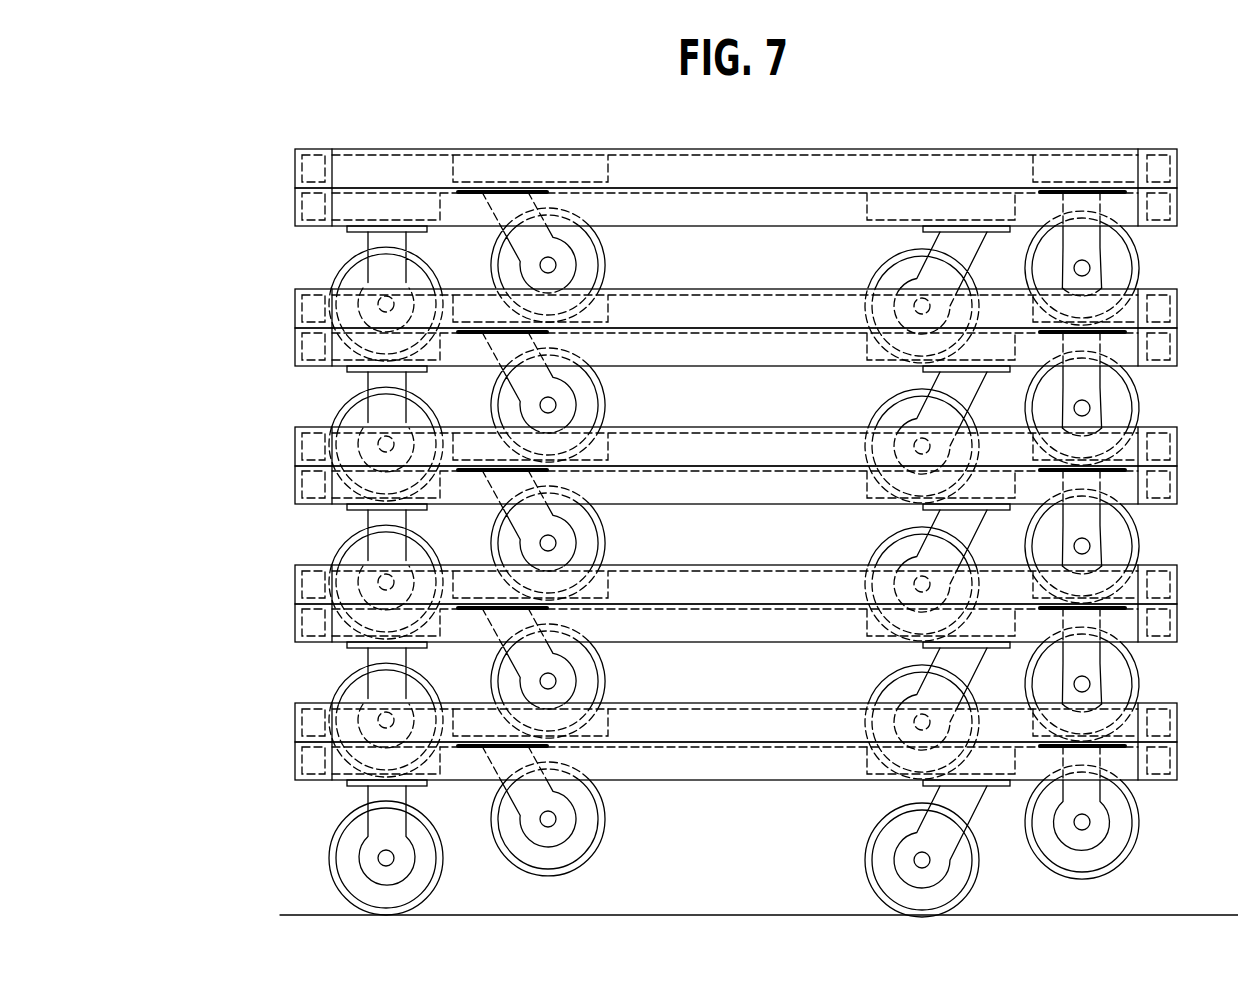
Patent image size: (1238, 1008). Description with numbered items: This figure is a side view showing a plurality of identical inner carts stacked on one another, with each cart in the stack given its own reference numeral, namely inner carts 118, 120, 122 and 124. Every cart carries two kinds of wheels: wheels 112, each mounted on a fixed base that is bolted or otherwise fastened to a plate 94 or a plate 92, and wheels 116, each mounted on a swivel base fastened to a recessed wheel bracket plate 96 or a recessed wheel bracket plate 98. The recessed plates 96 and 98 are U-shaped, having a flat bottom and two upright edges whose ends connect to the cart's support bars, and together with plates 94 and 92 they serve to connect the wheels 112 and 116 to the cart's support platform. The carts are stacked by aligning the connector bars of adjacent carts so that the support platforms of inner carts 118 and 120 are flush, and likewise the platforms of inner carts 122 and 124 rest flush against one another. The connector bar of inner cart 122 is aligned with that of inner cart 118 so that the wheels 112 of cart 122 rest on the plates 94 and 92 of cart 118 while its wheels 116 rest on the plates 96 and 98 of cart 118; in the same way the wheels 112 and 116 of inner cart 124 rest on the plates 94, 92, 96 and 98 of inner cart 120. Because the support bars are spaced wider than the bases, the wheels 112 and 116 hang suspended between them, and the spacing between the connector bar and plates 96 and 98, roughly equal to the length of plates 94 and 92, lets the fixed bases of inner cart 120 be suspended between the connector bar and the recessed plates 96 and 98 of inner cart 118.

The plate 92 is at (1028, 730).
The plate 94 is at (441, 762).
The recessed wheel bracket plate 96 is at (614, 722).
The recessed wheel bracket plate 98 is at (857, 767).
The wheel 112 is at (345, 688).
The wheel 116 is at (605, 673).
The inner cart 118 is at (287, 762).
The inner cart 120 is at (287, 724).
The inner cart 122 is at (287, 620).
The inner cart 124 is at (287, 583).